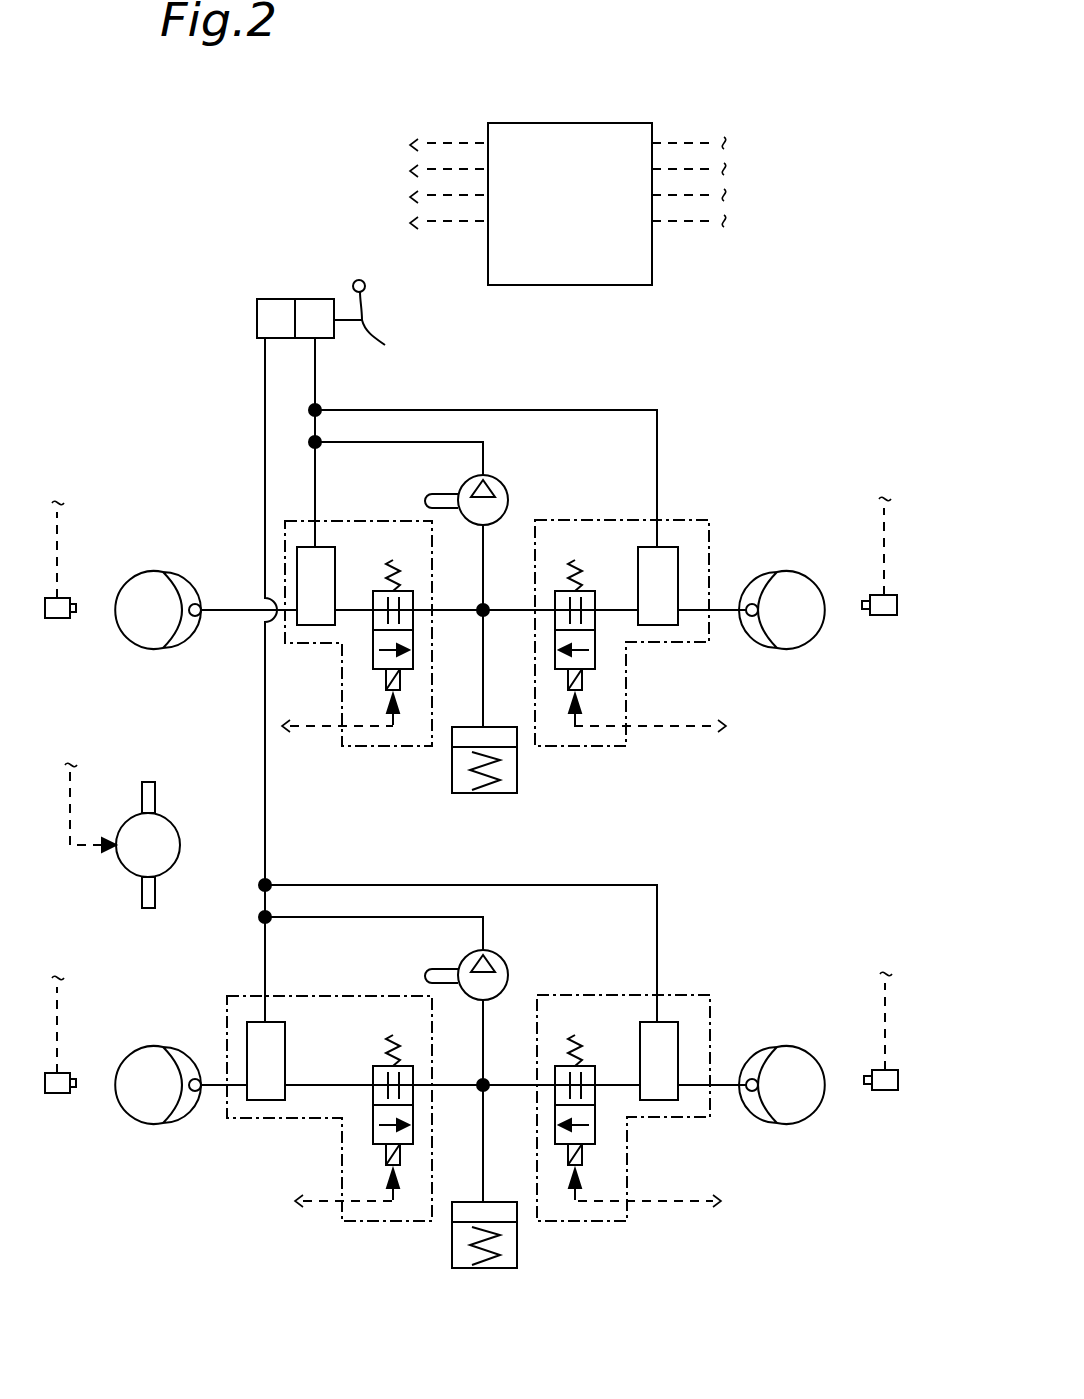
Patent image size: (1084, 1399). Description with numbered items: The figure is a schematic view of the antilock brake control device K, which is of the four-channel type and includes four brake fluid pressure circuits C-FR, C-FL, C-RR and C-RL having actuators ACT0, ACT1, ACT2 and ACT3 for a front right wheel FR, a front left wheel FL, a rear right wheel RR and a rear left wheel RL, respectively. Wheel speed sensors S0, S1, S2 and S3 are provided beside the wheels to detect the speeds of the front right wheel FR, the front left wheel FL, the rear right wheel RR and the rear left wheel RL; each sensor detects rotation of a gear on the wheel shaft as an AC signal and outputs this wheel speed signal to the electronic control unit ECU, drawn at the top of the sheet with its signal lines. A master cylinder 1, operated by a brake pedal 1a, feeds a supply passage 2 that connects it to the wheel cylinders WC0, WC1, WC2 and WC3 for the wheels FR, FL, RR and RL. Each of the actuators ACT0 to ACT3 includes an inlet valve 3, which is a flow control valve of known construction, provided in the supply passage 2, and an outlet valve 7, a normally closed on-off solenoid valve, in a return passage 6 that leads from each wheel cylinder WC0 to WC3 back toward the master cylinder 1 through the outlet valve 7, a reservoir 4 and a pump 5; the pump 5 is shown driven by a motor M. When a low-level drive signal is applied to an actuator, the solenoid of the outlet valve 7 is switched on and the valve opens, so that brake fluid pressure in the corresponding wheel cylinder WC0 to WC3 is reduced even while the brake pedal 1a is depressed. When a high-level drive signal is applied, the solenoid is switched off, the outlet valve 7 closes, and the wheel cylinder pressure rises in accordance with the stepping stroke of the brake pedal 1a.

The master cylinder 1 is at (291, 298).
The brake pedal 1a is at (388, 345).
The supply passage 2 is at (527, 885).
The inlet valve 3 is at (679, 1035).
The reservoir 4 is at (570, 1253).
The pump 5 is at (556, 950).
The return passage 6 is at (388, 917).
The outlet valve 7 is at (502, 1140).
The electronic control unit ECU is at (538, 123).
The antilock brake control device K is at (836, 350).
The brake fluid pressure circuit C-FR is at (241, 398).
The brake fluid pressure circuit C-RL is at (681, 412).
The brake fluid pressure circuit C-FL is at (237, 966).
The brake fluid pressure circuit C-RR is at (681, 887).
The actuator ACT0 is at (290, 516).
The actuator ACT1 is at (285, 1120).
The actuator ACT2 is at (663, 993).
The actuator ACT3 is at (663, 518).
The wheel cylinder WC0 is at (176, 572).
The wheel cylinder WC1 is at (176, 1047).
The wheel cylinder WC2 is at (757, 1048).
The wheel cylinder WC3 is at (757, 573).
The wheel speed sensor S0 is at (63, 619).
The wheel speed sensor S1 is at (63, 1094).
The wheel speed sensor S2 is at (888, 1091).
The wheel speed sensor S3 is at (886, 616).
The front right wheel FR is at (160, 650).
The front left wheel FL is at (160, 1125).
The rear right wheel RR is at (788, 1125).
The rear left wheel RL is at (788, 650).
The pump motor M is at (122, 835).